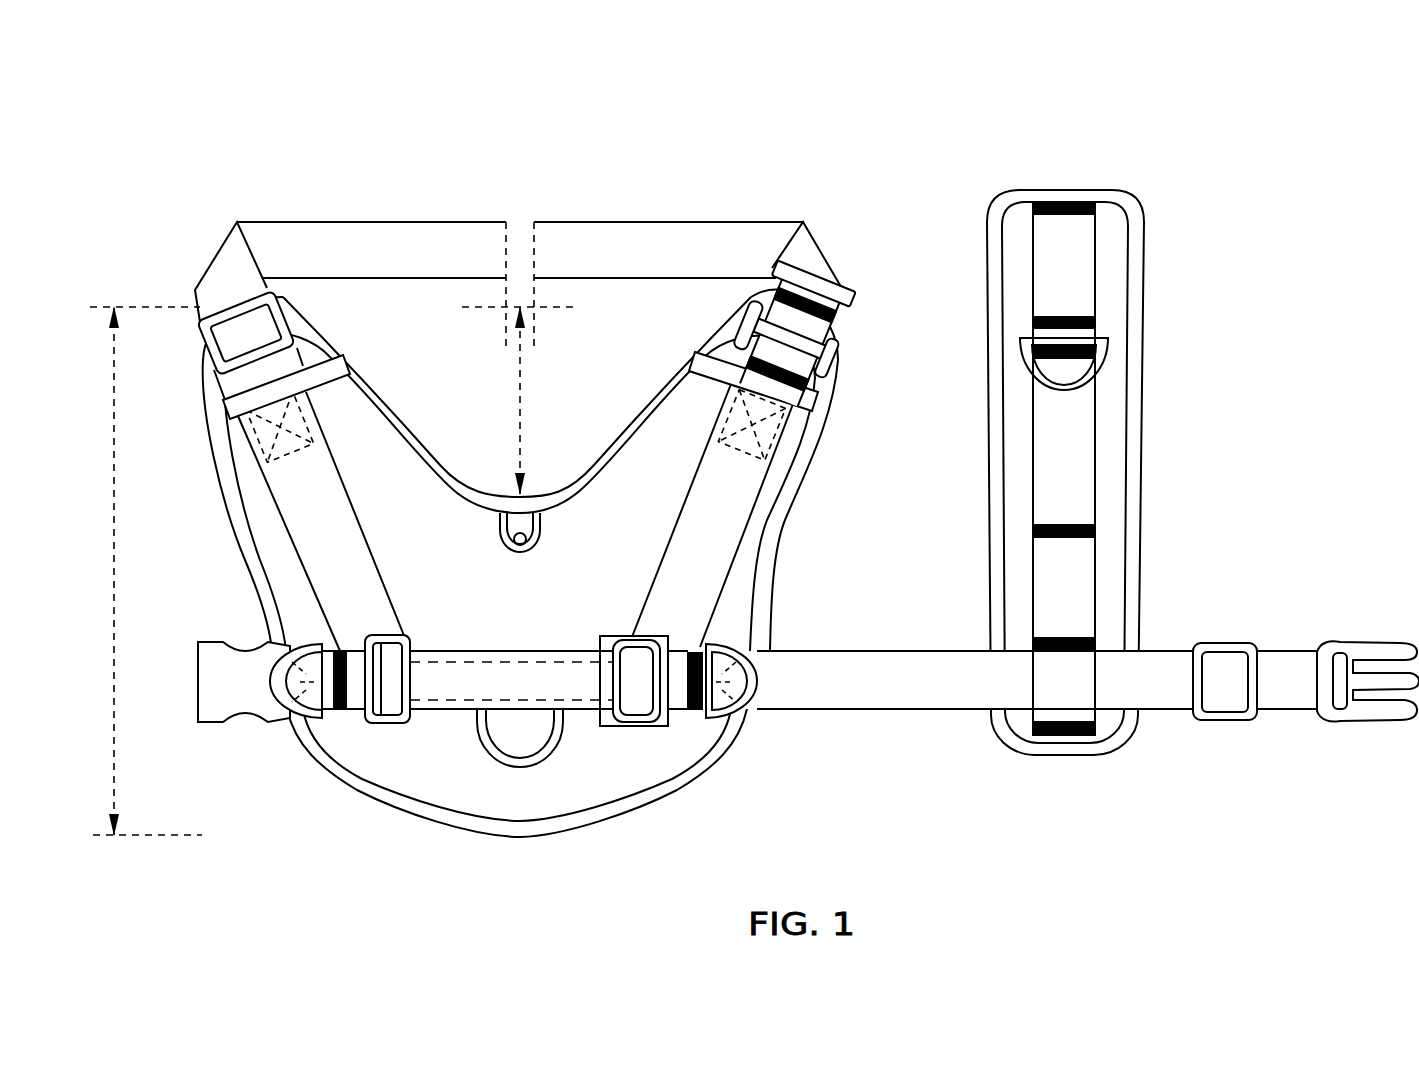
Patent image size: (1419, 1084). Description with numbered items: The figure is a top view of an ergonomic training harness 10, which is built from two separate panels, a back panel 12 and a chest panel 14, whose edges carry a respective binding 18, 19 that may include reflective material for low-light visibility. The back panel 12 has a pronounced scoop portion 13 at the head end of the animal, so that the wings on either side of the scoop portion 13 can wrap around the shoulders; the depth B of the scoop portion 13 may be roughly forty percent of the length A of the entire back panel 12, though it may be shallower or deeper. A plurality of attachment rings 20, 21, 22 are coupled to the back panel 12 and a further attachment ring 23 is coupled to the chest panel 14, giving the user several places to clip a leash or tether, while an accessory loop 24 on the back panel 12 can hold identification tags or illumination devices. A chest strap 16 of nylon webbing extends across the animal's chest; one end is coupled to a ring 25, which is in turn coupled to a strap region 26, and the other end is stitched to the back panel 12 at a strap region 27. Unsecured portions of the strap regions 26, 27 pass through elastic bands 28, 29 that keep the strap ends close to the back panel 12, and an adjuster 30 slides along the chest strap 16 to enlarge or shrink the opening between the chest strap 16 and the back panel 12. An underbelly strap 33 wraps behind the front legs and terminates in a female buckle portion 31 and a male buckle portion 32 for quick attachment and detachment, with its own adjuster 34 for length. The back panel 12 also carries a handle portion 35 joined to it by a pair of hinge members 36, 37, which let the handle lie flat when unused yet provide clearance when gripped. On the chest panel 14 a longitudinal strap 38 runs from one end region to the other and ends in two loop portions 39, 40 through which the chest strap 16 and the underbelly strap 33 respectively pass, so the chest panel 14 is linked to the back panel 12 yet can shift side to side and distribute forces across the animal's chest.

The ergonomic training harness 10 is at (296, 156).
The back panel 12 is at (398, 748).
The scoop portion 13 is at (547, 478).
The chest panel 14 is at (1103, 506).
The chest strap 16 is at (654, 238).
The binding 18 is at (742, 314).
The binding 19 is at (1134, 300).
The attachment ring 20 is at (555, 757).
The attachment ring 21 is at (295, 642).
The attachment ring 22 is at (740, 716).
The attachment ring 23 is at (1118, 356).
The accessory loop 24 is at (508, 513).
The ring 25 is at (836, 340).
The strap region 26 is at (730, 510).
The strap region 27 is at (312, 527).
The elastic band 28 is at (225, 408).
The elastic band 29 is at (812, 406).
The adjuster 30 is at (287, 320).
The female buckle portion 31 is at (196, 719).
The male buckle portion 32 is at (1377, 652).
The underbelly strap 33 is at (874, 700).
The adjuster 34 is at (1222, 647).
The handle portion 35 is at (410, 687).
The hinge member 36 is at (370, 716).
The hinge member 37 is at (646, 727).
The longitudinal strap 38 is at (1046, 452).
The loop portion 39 is at (1058, 235).
The loop portion 40 is at (1061, 692).
The length of the back panel A is at (112, 550).
The depth of the scoop portion B is at (515, 393).